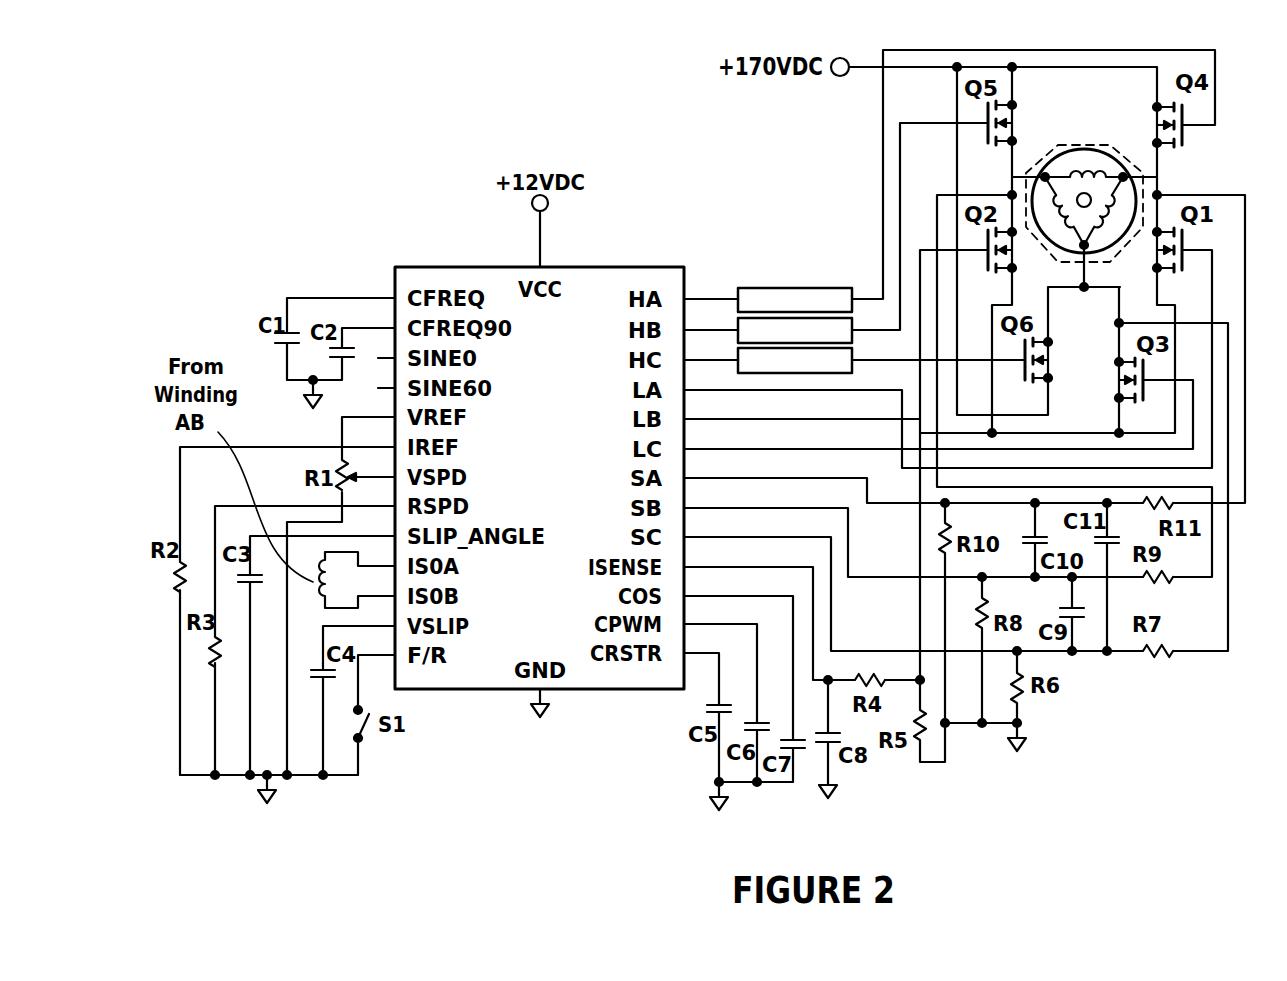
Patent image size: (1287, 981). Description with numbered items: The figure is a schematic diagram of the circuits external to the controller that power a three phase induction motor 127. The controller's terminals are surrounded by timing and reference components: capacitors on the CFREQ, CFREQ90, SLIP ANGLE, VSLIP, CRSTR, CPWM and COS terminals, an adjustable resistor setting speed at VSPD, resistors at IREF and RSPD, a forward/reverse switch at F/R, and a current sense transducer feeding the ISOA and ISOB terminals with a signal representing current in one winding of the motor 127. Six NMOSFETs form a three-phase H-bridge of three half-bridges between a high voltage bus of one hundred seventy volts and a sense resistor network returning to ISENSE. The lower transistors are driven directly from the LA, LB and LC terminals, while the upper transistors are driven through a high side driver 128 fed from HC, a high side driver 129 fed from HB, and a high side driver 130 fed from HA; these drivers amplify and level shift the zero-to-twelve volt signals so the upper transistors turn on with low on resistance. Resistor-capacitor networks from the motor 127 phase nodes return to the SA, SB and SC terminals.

The three phase induction motor 127 is at (1140, 168).
The high side driver 128 is at (856, 352).
The high side driver 129 is at (736, 323).
The high side driver 130 is at (795, 288).